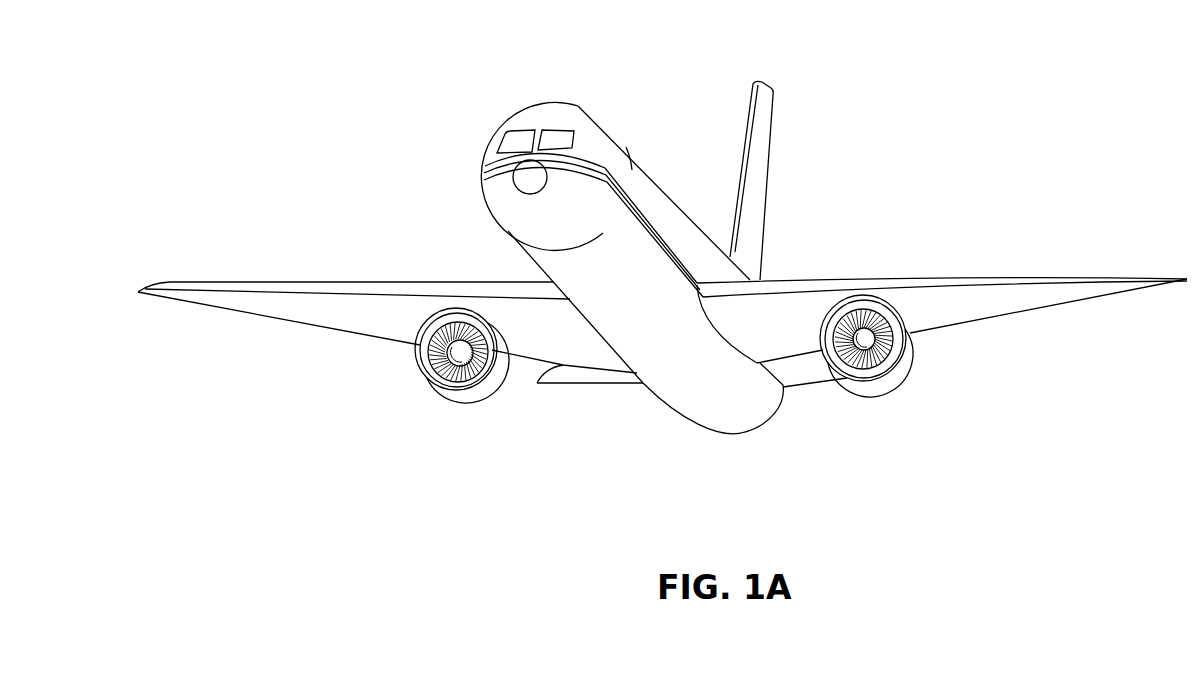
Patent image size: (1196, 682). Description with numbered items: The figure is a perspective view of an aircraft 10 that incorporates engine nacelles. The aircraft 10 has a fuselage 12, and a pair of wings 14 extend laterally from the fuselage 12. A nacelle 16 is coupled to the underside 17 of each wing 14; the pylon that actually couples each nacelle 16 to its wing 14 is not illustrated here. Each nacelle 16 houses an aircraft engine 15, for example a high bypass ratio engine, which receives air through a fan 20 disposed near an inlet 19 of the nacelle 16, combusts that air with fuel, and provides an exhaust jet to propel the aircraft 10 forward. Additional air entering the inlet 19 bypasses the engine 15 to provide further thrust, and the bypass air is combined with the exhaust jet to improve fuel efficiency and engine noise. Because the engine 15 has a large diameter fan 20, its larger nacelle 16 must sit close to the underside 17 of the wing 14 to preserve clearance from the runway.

The aircraft 10 is at (313, 78).
The fuselage 12 is at (643, 180).
The wings 14 is at (268, 288).
The aircraft engine 15 is at (425, 380).
The nacelle 16 is at (497, 380).
The underside of the wing 17 is at (265, 307).
The inlet 19 is at (423, 349).
The fan 20 is at (458, 354).